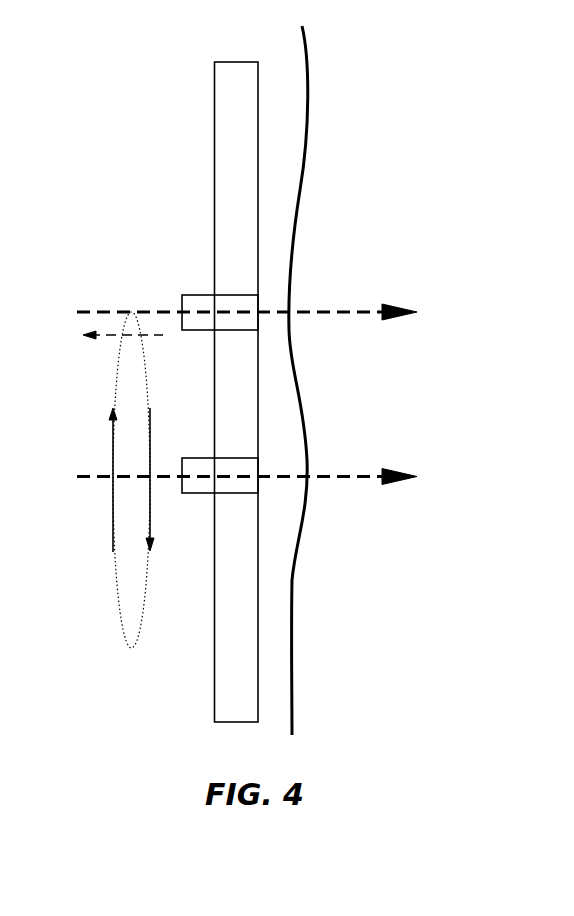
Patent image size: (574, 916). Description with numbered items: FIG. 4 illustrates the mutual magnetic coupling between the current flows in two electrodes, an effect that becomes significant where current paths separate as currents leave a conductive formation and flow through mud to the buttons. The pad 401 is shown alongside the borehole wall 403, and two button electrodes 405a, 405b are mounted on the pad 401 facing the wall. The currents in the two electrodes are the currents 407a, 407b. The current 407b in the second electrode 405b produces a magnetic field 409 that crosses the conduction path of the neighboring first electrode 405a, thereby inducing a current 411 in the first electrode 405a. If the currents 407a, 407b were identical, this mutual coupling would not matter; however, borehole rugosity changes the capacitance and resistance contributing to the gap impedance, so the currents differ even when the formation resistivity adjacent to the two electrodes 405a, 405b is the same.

The pad 401 is at (214, 103).
The borehole wall 403 is at (300, 136).
The first button electrode 405a is at (206, 295).
The second button electrode 405b is at (250, 458).
The current in first electrode 407a is at (352, 311).
The current in second electrode 407b is at (352, 476).
The magnetic field 409 is at (150, 452).
The induced current 411 is at (115, 338).